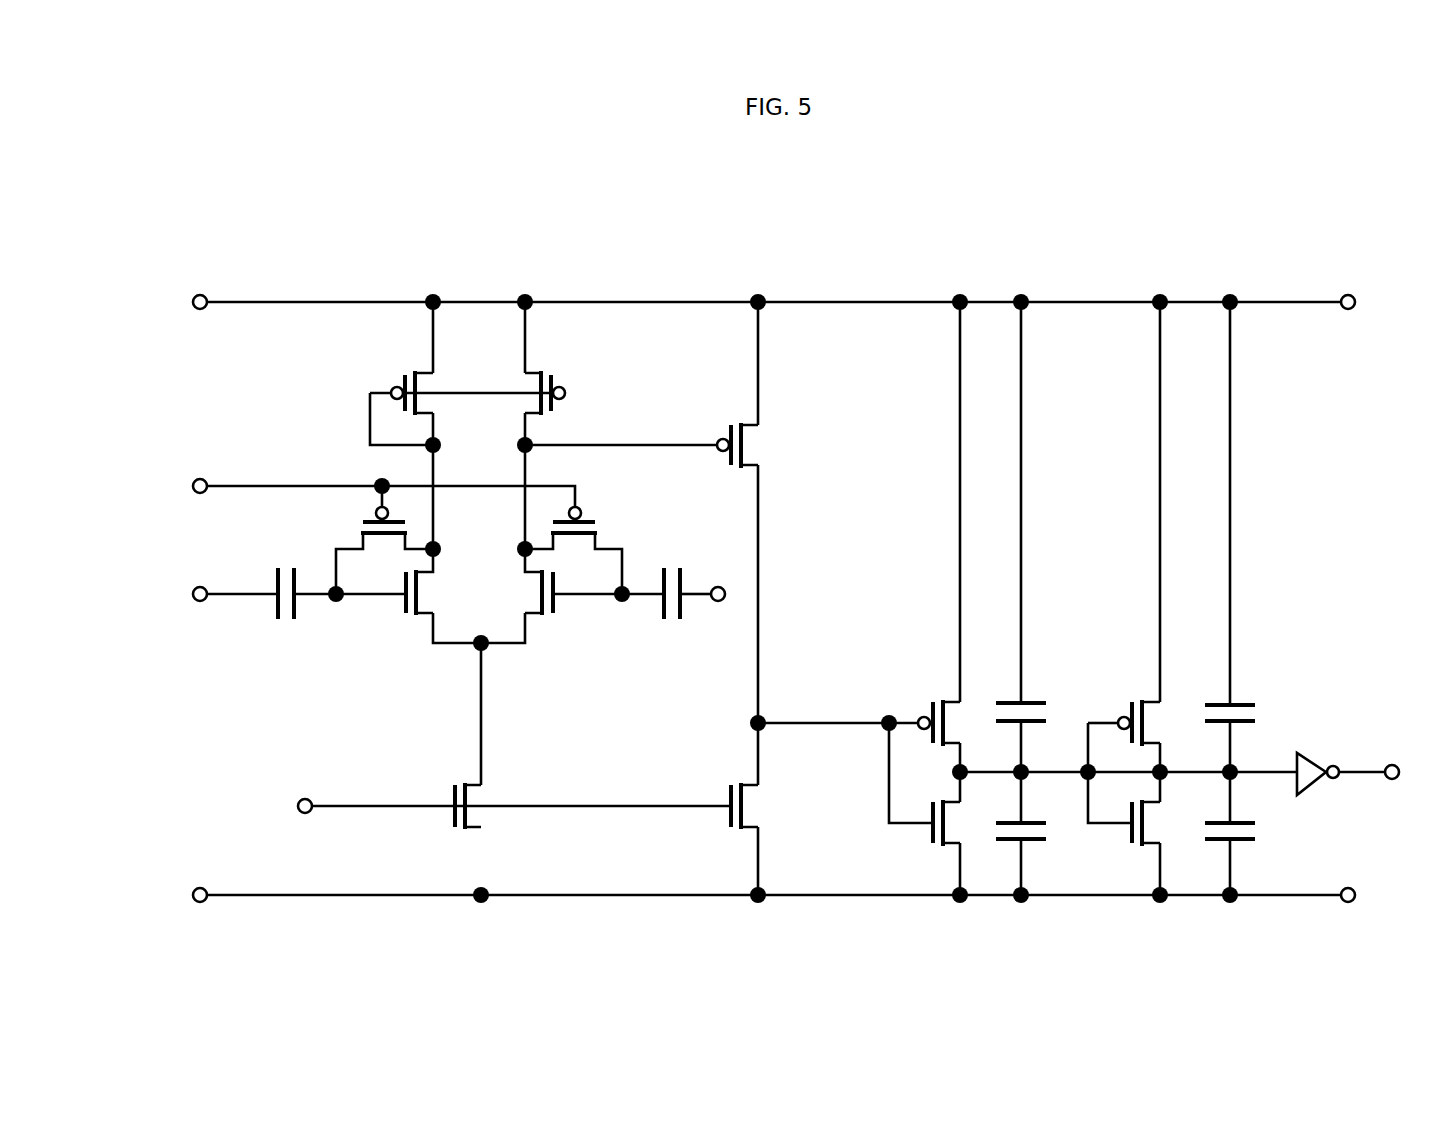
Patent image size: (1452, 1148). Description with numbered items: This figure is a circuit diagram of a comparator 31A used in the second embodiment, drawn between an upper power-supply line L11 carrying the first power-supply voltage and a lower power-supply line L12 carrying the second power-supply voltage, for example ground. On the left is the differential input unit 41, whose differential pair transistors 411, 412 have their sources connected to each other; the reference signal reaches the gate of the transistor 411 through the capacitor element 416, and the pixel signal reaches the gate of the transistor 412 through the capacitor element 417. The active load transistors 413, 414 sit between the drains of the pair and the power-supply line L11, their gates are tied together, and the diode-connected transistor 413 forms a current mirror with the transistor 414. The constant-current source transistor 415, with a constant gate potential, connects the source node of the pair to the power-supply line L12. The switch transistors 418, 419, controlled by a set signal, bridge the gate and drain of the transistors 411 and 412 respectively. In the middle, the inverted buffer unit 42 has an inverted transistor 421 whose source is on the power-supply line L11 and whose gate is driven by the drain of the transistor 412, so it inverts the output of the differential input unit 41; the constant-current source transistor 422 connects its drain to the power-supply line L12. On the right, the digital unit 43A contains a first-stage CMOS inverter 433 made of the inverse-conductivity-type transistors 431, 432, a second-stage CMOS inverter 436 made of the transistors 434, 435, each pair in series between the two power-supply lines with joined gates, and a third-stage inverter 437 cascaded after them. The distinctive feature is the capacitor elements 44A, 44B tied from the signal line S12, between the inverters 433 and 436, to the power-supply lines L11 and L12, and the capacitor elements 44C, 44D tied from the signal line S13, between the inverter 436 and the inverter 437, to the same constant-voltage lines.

The comparator 31A is at (1138, 218).
The differential input unit 41 is at (568, 262).
The inverted buffer unit 42 is at (826, 262).
The digital unit 43A is at (1276, 624).
The differential pair transistor 411 is at (420, 596).
The differential pair transistor 412 is at (542, 615).
The active load transistor 413 is at (420, 400).
The active load transistor 414 is at (548, 413).
The constant-current source transistor 415 is at (473, 812).
The capacitor element 416 is at (288, 615).
The capacitor element 417 is at (673, 615).
The switch transistor 418 is at (370, 544).
The switch transistor 419 is at (586, 542).
The inverted transistor 421 is at (746, 442).
The constant-current source transistor 422 is at (746, 804).
The inverse-conductivity-type transistor 431 is at (945, 702).
The inverse-conductivity-type transistor 432 is at (946, 845).
The CMOS inverter 433 is at (884, 878).
The inverse-conductivity-type transistor 434 is at (1150, 702).
The inverse-conductivity-type transistor 435 is at (1150, 845).
The CMOS inverter 436 is at (1084, 878).
The inverter 437 is at (1314, 758).
The capacitor element 44A is at (1040, 716).
The capacitor element 44B is at (1040, 832).
The capacitor element 44C is at (1248, 714).
The capacitor element 44D is at (1250, 832).
The power-supply line L11 is at (292, 300).
The power-supply line L12 is at (577, 897).
The signal line S12 is at (1053, 776).
The signal line S13 is at (1262, 776).